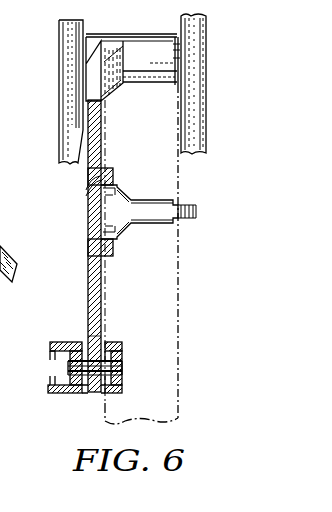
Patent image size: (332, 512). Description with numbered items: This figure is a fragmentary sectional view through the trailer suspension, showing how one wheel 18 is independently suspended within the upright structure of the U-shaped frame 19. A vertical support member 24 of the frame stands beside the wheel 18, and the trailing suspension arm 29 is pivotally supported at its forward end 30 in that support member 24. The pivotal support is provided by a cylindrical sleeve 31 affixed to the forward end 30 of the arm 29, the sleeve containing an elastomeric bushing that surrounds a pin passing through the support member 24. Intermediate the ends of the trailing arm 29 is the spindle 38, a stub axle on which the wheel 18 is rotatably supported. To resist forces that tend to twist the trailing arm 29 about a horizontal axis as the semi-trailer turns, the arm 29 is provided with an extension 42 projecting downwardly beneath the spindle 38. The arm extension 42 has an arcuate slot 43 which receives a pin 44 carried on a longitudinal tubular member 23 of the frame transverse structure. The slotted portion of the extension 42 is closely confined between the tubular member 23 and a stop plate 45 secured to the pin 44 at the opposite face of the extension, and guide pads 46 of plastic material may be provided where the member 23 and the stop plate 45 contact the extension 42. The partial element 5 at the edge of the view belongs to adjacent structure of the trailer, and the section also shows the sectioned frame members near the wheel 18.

The frame member 5 is at (8, 241).
The wheel 18 is at (178, 322).
The U-shaped frame 19 is at (59, 72).
The vertical support member 24 is at (206, 131).
The forward end 30 is at (100, 42).
The cylindrical sleeve 31 is at (158, 38).
The trailing suspension arm 29 is at (88, 274).
The spindle 38 is at (148, 223).
The arm extension 42 is at (98, 338).
The pin 44 is at (53, 368).
The longitudinal tubular member 23 is at (57, 395).
The stop plate 45 is at (123, 353).
The guide pads 46 is at (82, 393).
The arcuate slot 43 is at (92, 388).